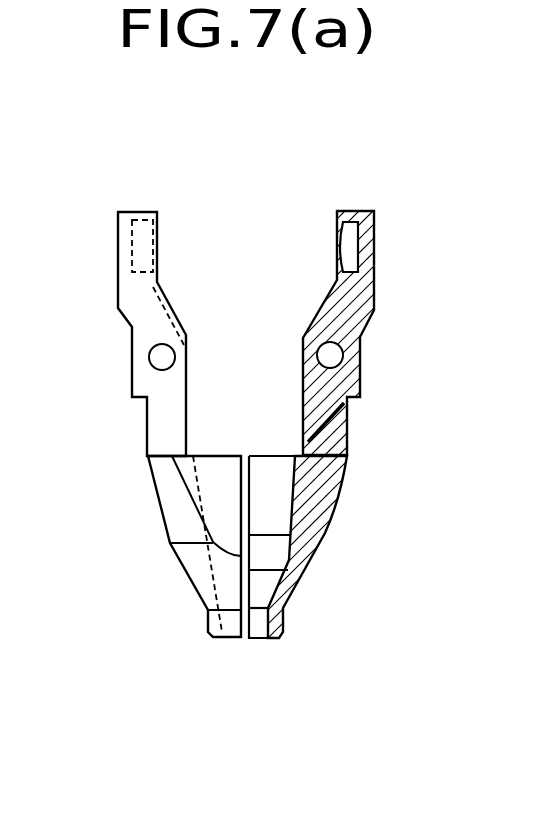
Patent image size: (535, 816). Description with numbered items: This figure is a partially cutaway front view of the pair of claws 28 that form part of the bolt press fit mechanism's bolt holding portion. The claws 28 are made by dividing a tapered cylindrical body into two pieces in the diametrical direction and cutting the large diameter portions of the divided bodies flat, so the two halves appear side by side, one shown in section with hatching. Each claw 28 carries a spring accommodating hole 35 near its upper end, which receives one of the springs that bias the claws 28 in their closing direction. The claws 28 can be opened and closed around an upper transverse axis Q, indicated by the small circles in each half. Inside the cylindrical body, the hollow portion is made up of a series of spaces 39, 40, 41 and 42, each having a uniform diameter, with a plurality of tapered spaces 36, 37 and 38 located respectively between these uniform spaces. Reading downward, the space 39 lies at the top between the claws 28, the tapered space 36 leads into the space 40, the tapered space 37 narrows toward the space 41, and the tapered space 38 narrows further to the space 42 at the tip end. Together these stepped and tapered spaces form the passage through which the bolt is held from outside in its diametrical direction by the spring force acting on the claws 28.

The claws 28 is at (106, 194).
The spring accommodating holes 35 is at (159, 222).
The tapered space 36 is at (198, 299).
The tapered space 37 is at (219, 489).
The tapered space 38 is at (223, 587).
The space 39 is at (268, 221).
The space 40 is at (280, 430).
The space 41 is at (277, 553).
The space 42 is at (258, 626).
The upper transverse axis Q is at (161, 357).